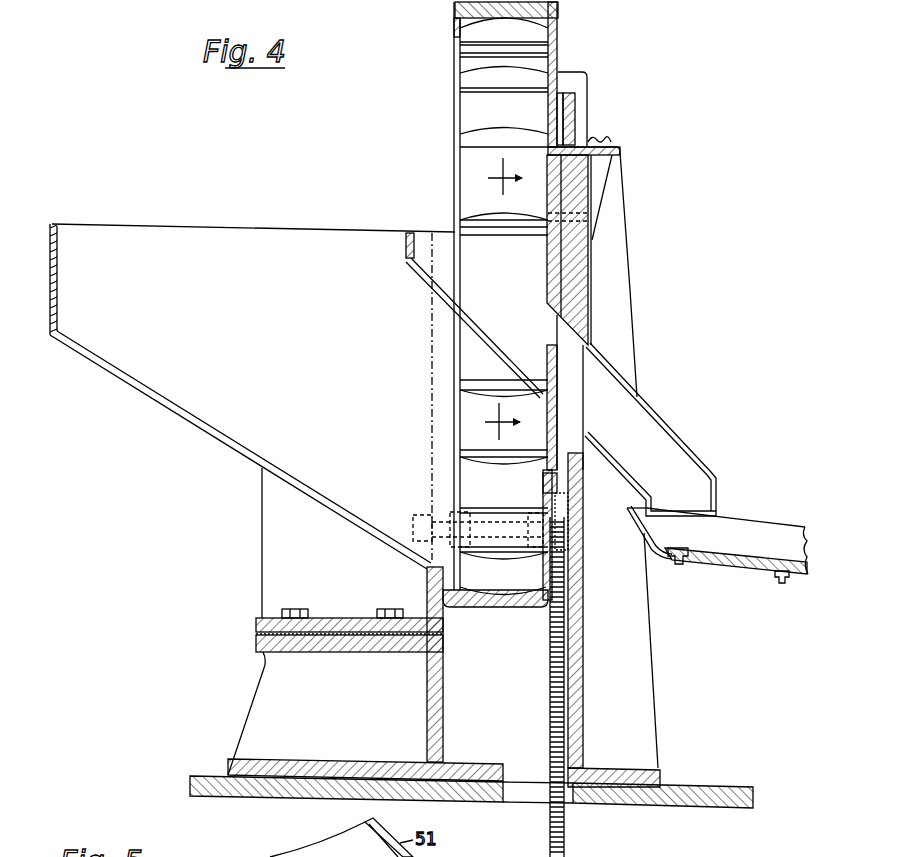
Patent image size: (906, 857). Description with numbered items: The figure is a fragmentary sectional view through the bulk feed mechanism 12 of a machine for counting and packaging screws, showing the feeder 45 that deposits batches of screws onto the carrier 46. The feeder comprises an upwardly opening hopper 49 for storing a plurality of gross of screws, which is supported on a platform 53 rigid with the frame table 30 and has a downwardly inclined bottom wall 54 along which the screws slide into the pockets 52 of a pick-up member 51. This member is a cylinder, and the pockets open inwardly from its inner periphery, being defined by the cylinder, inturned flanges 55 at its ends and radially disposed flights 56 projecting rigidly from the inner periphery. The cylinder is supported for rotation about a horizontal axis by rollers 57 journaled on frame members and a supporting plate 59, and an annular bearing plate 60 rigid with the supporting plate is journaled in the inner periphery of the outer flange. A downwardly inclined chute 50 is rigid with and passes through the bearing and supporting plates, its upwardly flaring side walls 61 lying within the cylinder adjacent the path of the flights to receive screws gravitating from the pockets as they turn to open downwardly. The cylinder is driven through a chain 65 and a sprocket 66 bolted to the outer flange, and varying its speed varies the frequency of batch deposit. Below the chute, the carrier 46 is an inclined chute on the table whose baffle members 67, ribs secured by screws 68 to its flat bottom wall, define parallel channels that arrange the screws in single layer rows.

The bulk feed mechanism 12 is at (676, 110).
The frame table 30 is at (204, 777).
The feeder 45 is at (387, 205).
The carrier 46 is at (769, 527).
The hopper 49 is at (238, 234).
The chute 50 is at (662, 432).
The member 51 is at (455, 12).
The pockets 52 is at (462, 105).
The platform 53 is at (259, 641).
The bottom wall 54 is at (235, 448).
The inturned flanges 55 is at (455, 26).
The flights 56 is at (470, 50).
The rollers 57 is at (476, 520).
The supporting plate 59 is at (582, 282).
The annular bearing plate 60 is at (553, 268).
The side walls 61 is at (426, 242).
The chain 65 is at (565, 826).
The sprocket 66 is at (576, 116).
The baffle members 67 is at (735, 553).
The screws 68 is at (688, 573).